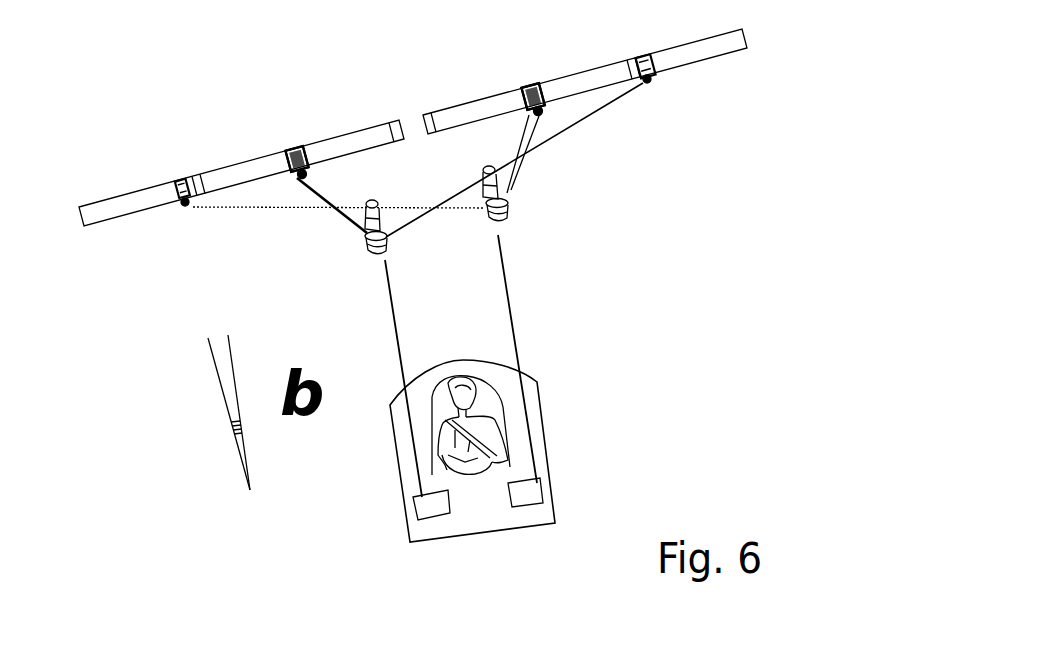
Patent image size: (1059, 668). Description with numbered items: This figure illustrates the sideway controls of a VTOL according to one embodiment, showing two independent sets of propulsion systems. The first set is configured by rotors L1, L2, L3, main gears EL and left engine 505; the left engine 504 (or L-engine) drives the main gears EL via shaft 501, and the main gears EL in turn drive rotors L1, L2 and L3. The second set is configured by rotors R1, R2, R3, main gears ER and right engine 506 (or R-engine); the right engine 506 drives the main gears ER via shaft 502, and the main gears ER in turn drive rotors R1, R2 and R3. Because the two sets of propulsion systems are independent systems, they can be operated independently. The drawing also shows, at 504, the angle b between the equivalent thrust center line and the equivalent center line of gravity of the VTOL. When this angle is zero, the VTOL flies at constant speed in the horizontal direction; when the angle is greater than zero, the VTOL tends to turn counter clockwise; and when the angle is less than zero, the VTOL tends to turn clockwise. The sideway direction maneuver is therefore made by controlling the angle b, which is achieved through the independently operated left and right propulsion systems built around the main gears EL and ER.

The shaft 501 is at (340, 378).
The shaft 502 is at (570, 359).
The left engine 504 is at (173, 388).
The left engine 505 is at (384, 516).
The right engine 506 is at (593, 484).
The rotor R1 is at (140, 176).
The rotor L1 is at (287, 138).
The rotor L2 is at (296, 159).
The rotor R3 is at (529, 77).
The rotor R2 is at (532, 96).
The rotor L3 is at (679, 87).
The main gears EL is at (358, 249).
The main gears ER is at (525, 217).